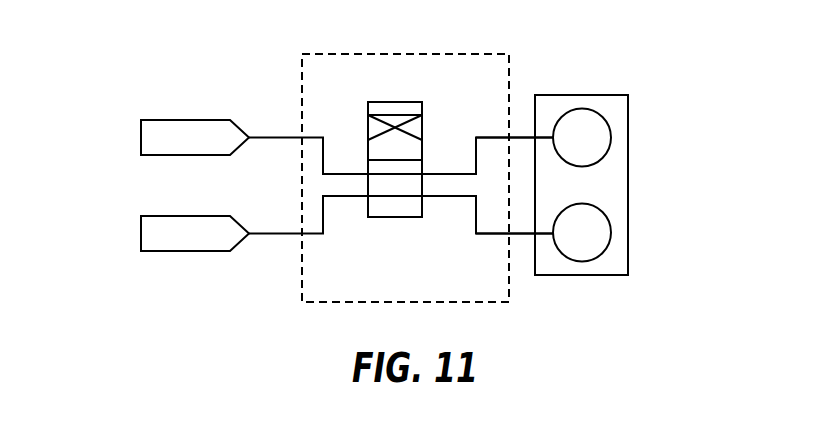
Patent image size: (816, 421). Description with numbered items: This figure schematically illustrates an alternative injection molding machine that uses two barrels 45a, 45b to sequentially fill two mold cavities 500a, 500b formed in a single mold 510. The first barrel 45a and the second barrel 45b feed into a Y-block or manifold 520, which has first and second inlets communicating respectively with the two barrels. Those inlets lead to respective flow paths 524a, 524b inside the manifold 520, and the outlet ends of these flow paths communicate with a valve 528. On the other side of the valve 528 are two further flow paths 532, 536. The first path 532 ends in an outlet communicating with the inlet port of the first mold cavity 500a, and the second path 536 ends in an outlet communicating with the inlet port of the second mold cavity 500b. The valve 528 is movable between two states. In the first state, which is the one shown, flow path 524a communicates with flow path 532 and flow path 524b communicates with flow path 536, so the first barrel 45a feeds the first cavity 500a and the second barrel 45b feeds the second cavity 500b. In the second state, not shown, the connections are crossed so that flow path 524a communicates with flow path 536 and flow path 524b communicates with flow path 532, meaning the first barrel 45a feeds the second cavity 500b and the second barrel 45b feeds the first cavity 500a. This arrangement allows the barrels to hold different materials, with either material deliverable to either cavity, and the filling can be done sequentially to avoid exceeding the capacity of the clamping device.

The first barrel 45a is at (153, 137).
The second barrel 45b is at (153, 233).
The manifold 520 is at (437, 54).
The first flow path 524a is at (318, 137).
The second flow path 524b is at (318, 236).
The valve 528 is at (387, 218).
The first outlet flow path 532 is at (474, 137).
The second outlet flow path 536 is at (488, 236).
The mold 510 is at (590, 95).
The first mold cavity 500a is at (594, 137).
The second mold cavity 500b is at (590, 233).